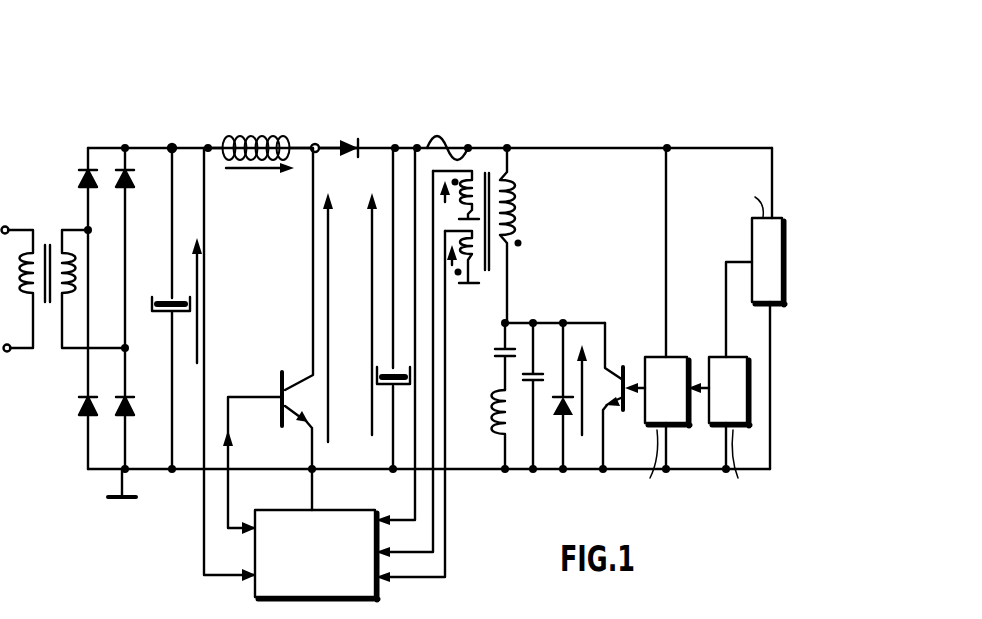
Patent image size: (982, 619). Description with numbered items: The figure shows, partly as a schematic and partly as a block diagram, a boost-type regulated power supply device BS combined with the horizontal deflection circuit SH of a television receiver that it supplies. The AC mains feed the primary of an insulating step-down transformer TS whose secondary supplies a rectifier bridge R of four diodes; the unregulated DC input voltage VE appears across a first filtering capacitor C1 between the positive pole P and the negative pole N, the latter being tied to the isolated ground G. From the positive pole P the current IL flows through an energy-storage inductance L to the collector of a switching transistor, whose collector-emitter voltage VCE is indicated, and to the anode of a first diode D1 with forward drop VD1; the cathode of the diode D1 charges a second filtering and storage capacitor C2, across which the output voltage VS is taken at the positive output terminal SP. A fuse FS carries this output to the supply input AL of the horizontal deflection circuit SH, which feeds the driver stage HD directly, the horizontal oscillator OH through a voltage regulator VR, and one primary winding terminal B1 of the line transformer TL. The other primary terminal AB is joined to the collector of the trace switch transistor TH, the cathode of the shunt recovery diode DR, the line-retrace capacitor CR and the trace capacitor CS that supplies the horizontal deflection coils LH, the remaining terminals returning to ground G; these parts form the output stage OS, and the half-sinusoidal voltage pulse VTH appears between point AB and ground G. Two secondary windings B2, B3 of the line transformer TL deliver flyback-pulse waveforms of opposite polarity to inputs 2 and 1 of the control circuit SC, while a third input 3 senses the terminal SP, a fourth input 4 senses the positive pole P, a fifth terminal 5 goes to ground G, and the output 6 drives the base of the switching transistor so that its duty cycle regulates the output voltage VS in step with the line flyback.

The insulating step-down transformer TS is at (44, 236).
The rectifier bridge R is at (114, 283).
The positive pole P is at (172, 144).
The negative pole N is at (172, 471).
The ground G is at (113, 495).
The first filtering capacitor C1 is at (151, 310).
The input voltage VE is at (200, 280).
The energy-storage inductance L is at (250, 132).
The current flowing through the inductance IL is at (260, 180).
The supply device BS is at (289, 123).
The forward voltage drop VD1 is at (385, 104).
The first diode D1 is at (353, 141).
The positive output terminal SP is at (413, 145).
The fuse FS is at (449, 143).
The positive supply input AL is at (469, 145).
The horizontal deflection circuit SH is at (652, 137).
The collector-emitter voltage VCE is at (330, 294).
The output voltage VS is at (370, 288).
The second filtering and storage capacitor C2 is at (385, 391).
The line transformer TL is at (493, 293).
The primary winding terminal B1 is at (514, 205).
The first secondary winding B2 is at (493, 252).
The second secondary winding B3 is at (490, 170).
The other terminal AB is at (509, 320).
The output stage OS is at (587, 285).
The trace capacitor CS is at (500, 355).
The horizontal deflection coils LH is at (492, 418).
The line-retrace capacitor CR is at (534, 373).
The shunt recovery diode DR is at (557, 404).
The trace switch transistor TH is at (624, 375).
The voltage pulse VTH is at (587, 426).
The driver stage HD is at (676, 372).
The horizontal oscillator OH is at (735, 372).
The voltage regulator VR is at (757, 233).
The control circuit SC is at (345, 520).
The input 1 is at (380, 545).
The input 2 is at (380, 582).
The third input 3 is at (377, 518).
The fourth input 4 is at (252, 563).
The fifth terminal 5 is at (309, 507).
The output 6 is at (253, 526).